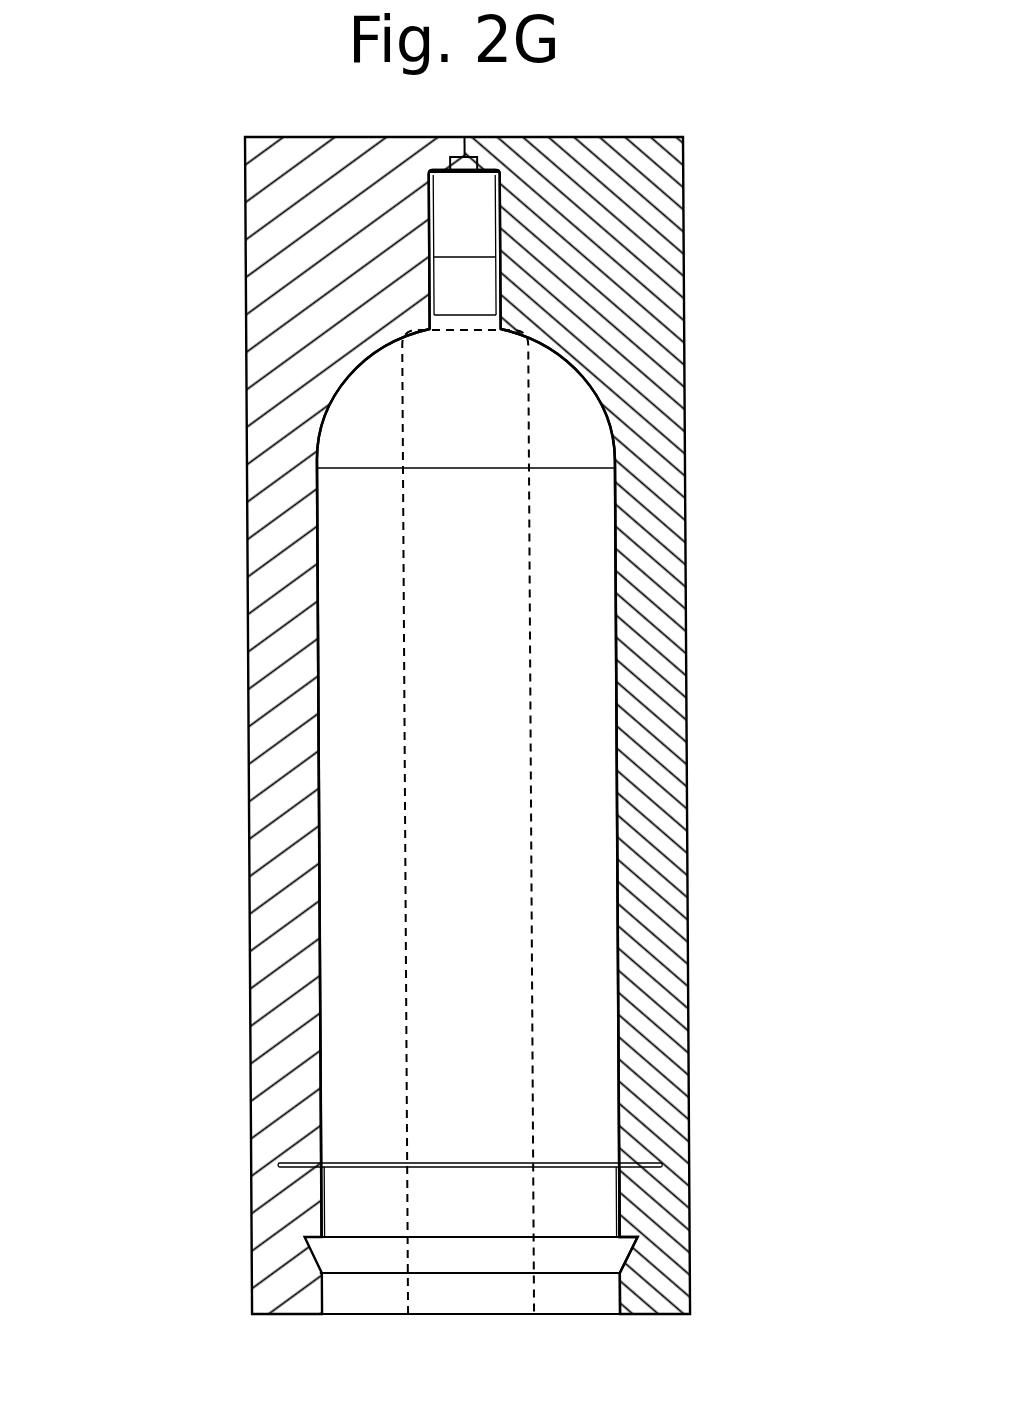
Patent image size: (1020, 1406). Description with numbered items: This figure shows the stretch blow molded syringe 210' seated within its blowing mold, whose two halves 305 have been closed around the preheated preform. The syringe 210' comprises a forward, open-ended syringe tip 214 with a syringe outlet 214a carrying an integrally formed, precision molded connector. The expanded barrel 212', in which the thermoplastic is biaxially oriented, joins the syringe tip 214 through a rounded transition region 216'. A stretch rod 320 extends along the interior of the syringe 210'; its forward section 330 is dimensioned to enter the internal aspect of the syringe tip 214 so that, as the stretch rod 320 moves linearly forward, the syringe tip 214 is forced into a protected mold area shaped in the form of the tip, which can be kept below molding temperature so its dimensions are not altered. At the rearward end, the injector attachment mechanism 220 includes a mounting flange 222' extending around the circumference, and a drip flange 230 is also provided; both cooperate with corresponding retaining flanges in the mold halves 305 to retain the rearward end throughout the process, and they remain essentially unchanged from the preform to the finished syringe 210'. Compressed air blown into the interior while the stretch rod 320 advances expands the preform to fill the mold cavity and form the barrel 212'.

The blowing mold halves 305 is at (688, 447).
The syringe outlet 214a is at (440, 152).
The syringe tip 214 is at (523, 187).
The forward section of stretch rod 330 is at (478, 295).
The transition region 216' is at (391, 336).
The barrel 212' is at (244, 807).
The stretch rod 320 is at (390, 642).
The blow molded syringe 210' is at (396, 848).
The drip flange 230 is at (300, 1162).
The mounting flange 222' is at (383, 1167).
The injector attachment mechanism 220 is at (643, 1207).